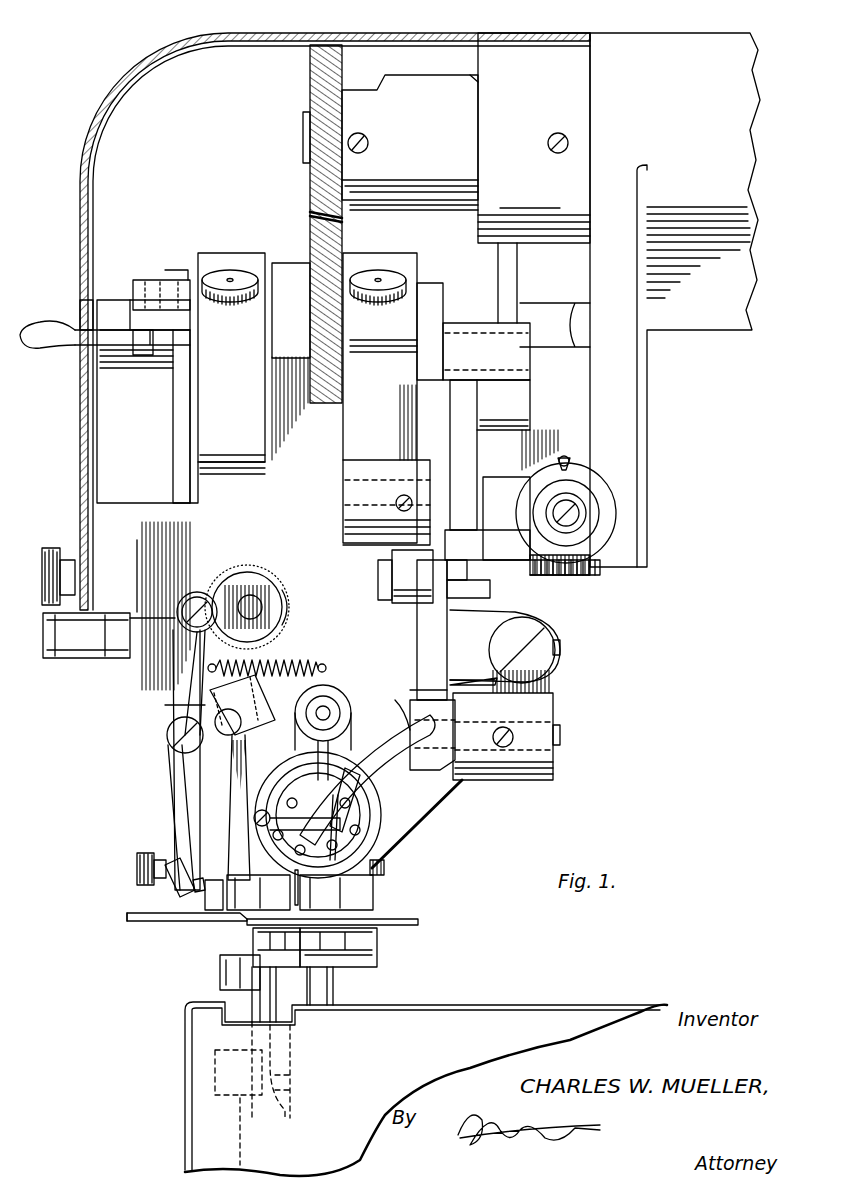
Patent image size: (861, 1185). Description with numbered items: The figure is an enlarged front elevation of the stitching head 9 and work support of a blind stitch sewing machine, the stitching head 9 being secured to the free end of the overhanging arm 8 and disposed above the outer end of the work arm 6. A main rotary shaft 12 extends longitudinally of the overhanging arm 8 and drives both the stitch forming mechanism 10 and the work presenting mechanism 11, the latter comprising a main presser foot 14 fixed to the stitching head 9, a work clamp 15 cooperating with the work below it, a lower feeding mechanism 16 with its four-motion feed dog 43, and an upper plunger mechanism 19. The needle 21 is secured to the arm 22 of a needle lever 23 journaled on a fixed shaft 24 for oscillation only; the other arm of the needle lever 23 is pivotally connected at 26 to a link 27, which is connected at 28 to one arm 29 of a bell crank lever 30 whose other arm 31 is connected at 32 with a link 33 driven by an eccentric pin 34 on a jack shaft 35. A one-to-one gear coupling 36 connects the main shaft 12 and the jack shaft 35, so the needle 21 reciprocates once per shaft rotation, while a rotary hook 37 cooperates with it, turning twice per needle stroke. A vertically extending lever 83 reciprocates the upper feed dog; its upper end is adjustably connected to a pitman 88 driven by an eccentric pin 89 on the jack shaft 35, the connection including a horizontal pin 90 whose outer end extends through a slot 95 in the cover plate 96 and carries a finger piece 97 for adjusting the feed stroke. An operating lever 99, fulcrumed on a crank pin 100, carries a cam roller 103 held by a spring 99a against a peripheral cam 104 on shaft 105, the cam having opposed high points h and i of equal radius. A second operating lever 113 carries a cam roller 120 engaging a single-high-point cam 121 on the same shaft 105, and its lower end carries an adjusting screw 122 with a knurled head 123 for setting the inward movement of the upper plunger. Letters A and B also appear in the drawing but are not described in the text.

The work arm 6 is at (499, 1016).
The overhanging arm 8 is at (674, 50).
The stitching head 9 is at (585, 565).
The stitch forming mechanism 10 is at (406, 656).
The work presenting mechanism 11 is at (388, 953).
The main rotary shaft 12 is at (303, 130).
The main presser foot 14 is at (365, 901).
The work clamp 15 is at (253, 940).
The lower feeding mechanism 16 is at (213, 979).
The upper plunger mechanism 19 is at (187, 768).
The needle 21 is at (378, 855).
The arm of needle lever 22 is at (385, 780).
The needle lever 23 is at (398, 712).
The fixed shaft 24 is at (560, 733).
The pivotal connection 26 is at (450, 786).
The link 27 is at (410, 690).
The pivotal connection 28 is at (384, 570).
The arm of bell crank lever 29 is at (467, 577).
The bell crank lever 30 is at (479, 594).
The arm of bell crank lever 31 is at (493, 487).
The pivotal connection 32 is at (433, 547).
The link 33 is at (466, 452).
The eccentric pin 34 is at (458, 333).
The jack shaft 35 is at (278, 300).
The gear coupling 36 is at (352, 221).
The rotary hook 37 is at (300, 793).
The feed dog 43 is at (187, 695).
The lever 83 is at (175, 445).
The pitman 88 is at (150, 285).
The eccentric pin 89 is at (115, 300).
The horizontal pin 90 is at (120, 346).
The slot 95 is at (80, 308).
The cover plate 96 is at (80, 215).
The finger piece 97 is at (40, 346).
The operating lever 99 is at (230, 840).
The spring 99a is at (305, 665).
The crank pin 100 is at (240, 722).
The cam roller 103 is at (198, 592).
The peripheral cam 104 is at (292, 625).
The shaft 105 is at (262, 600).
The operating lever 113 is at (168, 788).
The cam roller 120 is at (212, 600).
The peripheral cam 121 is at (258, 580).
The adjusting screw 122 is at (150, 882).
The knurled head 123 is at (137, 867).
The plate A is at (420, 921).
The plate end B is at (125, 915).
The high point h is at (215, 603).
The high point i is at (272, 615).